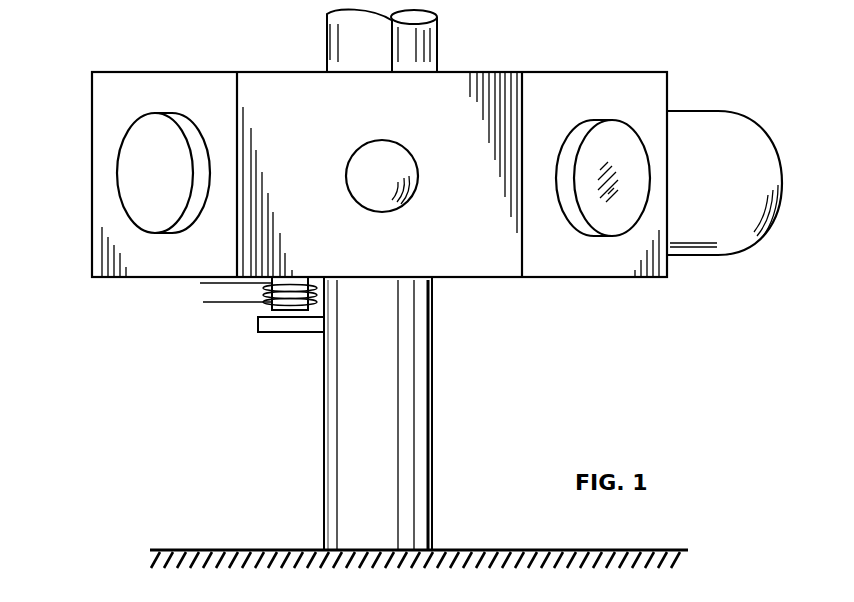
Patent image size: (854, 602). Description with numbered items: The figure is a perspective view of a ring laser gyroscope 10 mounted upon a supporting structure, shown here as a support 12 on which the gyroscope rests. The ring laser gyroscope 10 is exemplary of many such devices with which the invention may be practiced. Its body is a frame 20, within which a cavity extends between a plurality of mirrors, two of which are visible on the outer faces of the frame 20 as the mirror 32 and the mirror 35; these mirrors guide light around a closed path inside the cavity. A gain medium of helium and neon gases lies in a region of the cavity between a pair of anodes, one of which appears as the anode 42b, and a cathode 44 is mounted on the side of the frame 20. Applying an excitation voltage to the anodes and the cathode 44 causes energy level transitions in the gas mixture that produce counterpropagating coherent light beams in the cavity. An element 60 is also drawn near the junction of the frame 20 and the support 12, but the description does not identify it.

The ring laser gyroscope 10 is at (140, 309).
The support 12 is at (324, 470).
The frame 20 is at (484, 279).
The mirror 32 is at (123, 185).
The mirror 35 is at (618, 148).
The anode 42b is at (364, 153).
The cathode 44 is at (735, 240).
The clamp 60 is at (228, 326).